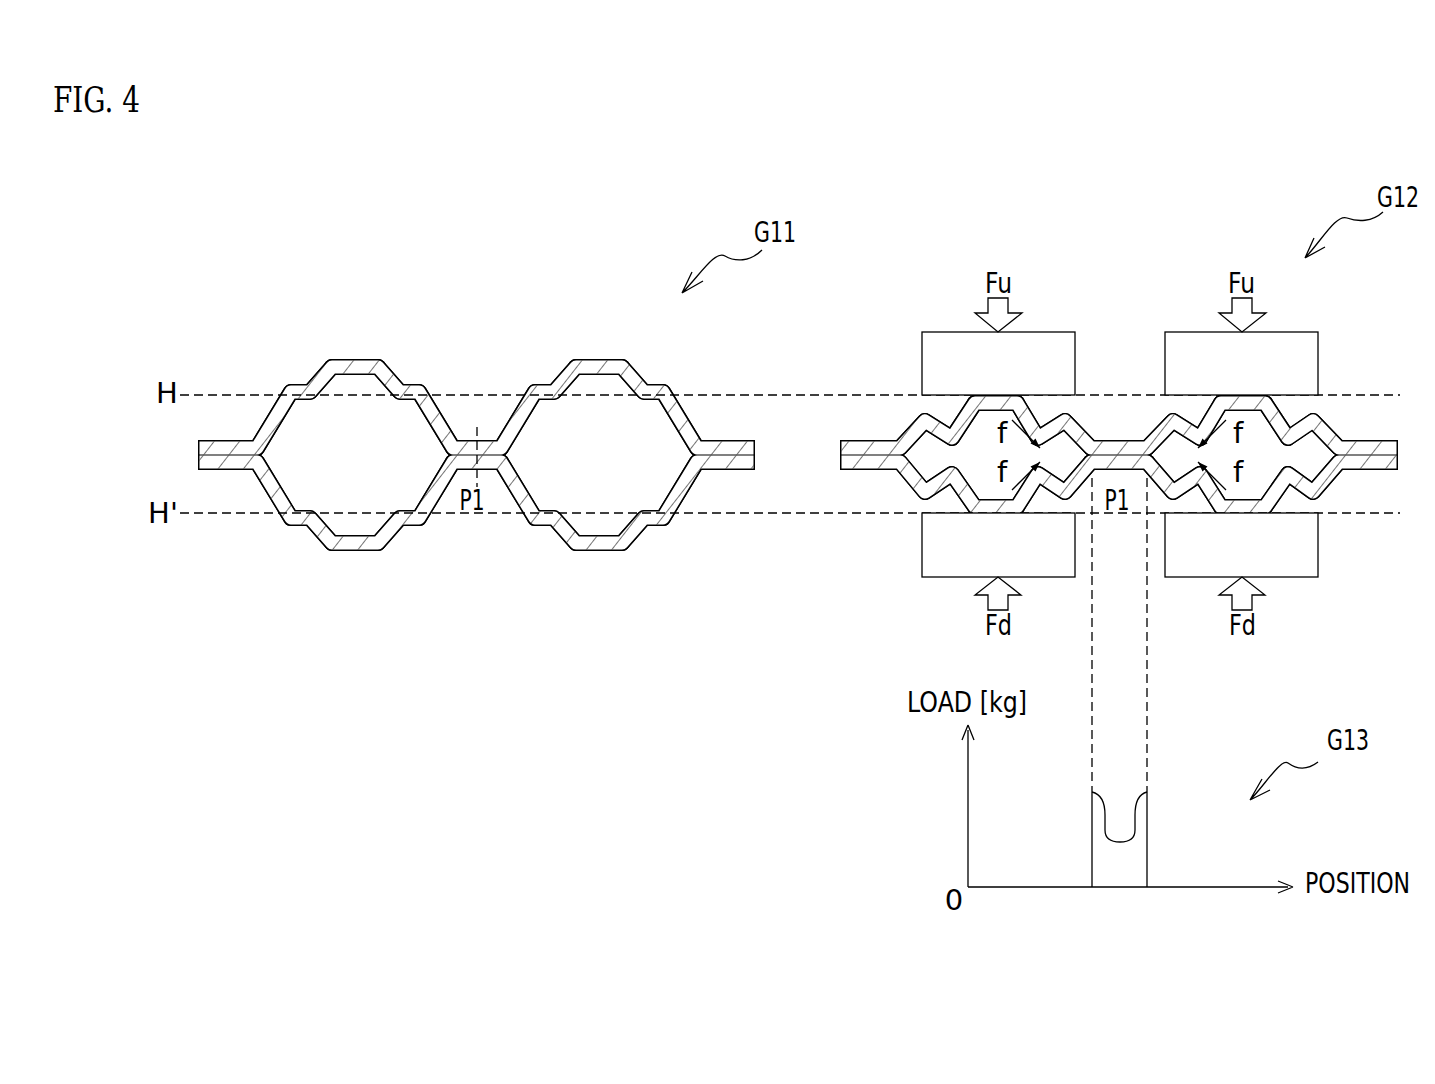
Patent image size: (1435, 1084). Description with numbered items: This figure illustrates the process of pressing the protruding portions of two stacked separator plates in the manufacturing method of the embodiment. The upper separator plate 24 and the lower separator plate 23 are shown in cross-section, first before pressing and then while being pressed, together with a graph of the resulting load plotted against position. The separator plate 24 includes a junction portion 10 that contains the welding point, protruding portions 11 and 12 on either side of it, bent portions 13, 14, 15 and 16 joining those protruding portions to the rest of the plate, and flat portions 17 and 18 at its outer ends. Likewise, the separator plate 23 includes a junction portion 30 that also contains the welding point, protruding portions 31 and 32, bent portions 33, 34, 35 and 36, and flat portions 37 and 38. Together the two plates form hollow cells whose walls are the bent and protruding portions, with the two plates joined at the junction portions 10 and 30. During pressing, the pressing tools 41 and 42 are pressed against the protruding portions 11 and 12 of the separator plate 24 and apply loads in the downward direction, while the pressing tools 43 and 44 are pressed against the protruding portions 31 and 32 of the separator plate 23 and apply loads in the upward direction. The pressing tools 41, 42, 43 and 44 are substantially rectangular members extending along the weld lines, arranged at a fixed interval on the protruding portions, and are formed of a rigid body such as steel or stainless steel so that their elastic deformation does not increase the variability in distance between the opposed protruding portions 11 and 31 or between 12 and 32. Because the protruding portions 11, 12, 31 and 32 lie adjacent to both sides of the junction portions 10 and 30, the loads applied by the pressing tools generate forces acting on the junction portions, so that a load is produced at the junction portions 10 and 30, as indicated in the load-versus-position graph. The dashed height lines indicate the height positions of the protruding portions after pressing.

The junction portion 10 is at (485, 440).
The protruding portion 11 is at (598, 360).
The protruding portion 12 is at (355, 360).
The bent portion 13 is at (288, 386).
The bent portion 14 is at (421, 386).
The bent portion 15 is at (548, 386).
The bent portion 16 is at (656, 386).
The flat portion 17 is at (222, 440).
The flat portion 18 is at (733, 440).
The separator plate 23 is at (186, 468).
The separator plate 24 is at (186, 452).
The junction portion 30 is at (485, 470).
The protruding portion 31 is at (598, 551).
The protruding portion 32 is at (356, 551).
The bent portion 33 is at (288, 524).
The bent portion 34 is at (421, 524).
The bent portion 35 is at (548, 524).
The bent portion 36 is at (656, 524).
The flat portion 37 is at (222, 470).
The flat portion 38 is at (733, 470).
The pressing tool 41 is at (1310, 332).
The pressing tool 42 is at (1060, 332).
The pressing tool 43 is at (1300, 578).
The pressing tool 44 is at (1045, 578).